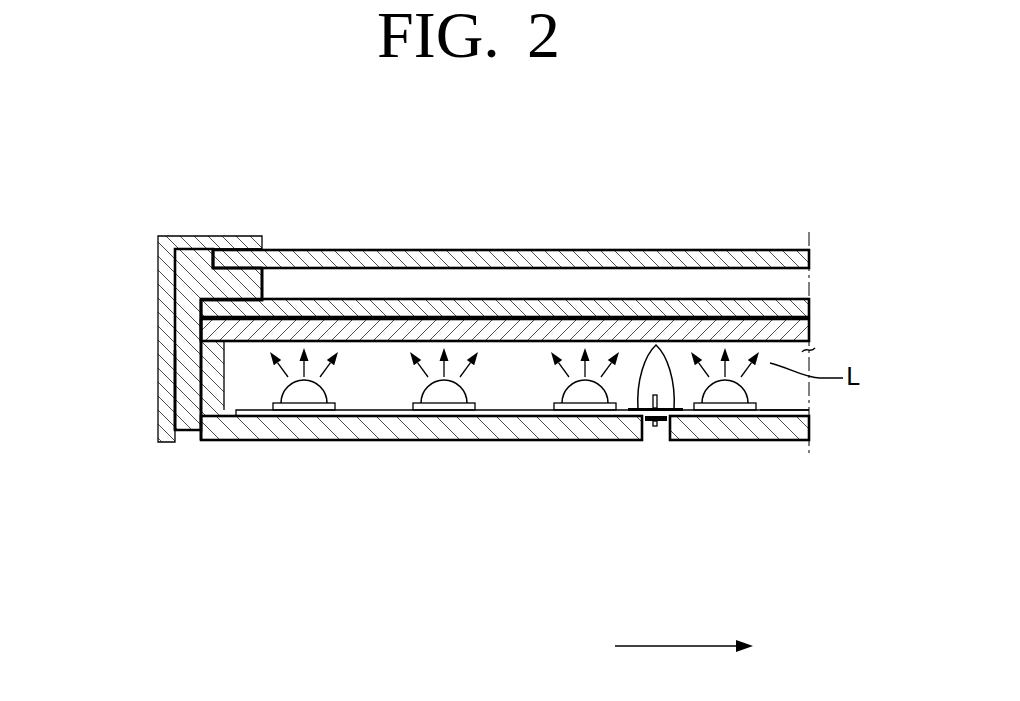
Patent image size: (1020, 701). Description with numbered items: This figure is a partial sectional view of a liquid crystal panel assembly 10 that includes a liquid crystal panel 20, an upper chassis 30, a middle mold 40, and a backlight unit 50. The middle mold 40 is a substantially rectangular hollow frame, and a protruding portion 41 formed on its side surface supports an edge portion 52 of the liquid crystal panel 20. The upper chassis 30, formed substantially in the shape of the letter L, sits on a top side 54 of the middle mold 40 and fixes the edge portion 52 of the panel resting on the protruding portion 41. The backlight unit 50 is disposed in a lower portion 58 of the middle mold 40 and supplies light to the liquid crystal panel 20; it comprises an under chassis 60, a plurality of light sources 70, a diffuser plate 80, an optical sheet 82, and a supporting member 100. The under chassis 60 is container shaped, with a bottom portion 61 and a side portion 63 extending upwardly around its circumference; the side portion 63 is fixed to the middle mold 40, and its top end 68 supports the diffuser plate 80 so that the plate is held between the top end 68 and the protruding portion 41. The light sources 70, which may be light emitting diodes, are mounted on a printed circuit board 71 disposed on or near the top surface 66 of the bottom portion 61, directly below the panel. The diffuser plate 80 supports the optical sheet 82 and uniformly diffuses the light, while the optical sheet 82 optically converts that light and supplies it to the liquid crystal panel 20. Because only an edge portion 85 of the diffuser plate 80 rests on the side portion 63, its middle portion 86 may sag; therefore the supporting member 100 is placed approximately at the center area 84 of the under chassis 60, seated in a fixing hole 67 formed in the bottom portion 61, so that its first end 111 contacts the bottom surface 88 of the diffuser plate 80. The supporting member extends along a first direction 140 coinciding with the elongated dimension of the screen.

The liquid crystal panel assembly 10 is at (496, 157).
The liquid crystal panel 20 is at (780, 253).
The upper chassis 30 is at (165, 253).
The middle mold 40 is at (187, 308).
The protruding portion 41 is at (232, 277).
The backlight unit 50 is at (834, 357).
The edge portion 52 is at (249, 258).
The top side 54 is at (191, 249).
The lower portion 58 is at (185, 383).
The under chassis 60 is at (486, 424).
The bottom portion 61 is at (257, 430).
The side portion 63 is at (196, 398).
The top surface 66 is at (370, 418).
The fixing hole 67 is at (662, 433).
The top end 68 is at (213, 347).
The light sources 70 is at (457, 408).
The printed circuit board 71 is at (795, 413).
The diffuser plate 80 is at (797, 331).
The optical sheet 82 is at (793, 304).
The center area 84 is at (648, 441).
The edge portion 85 is at (212, 330).
The middle portion 86 is at (667, 328).
The bottom surface 88 is at (515, 345).
The supporting member 100 is at (690, 400).
The first end 111 is at (657, 342).
The first direction 140 is at (682, 645).